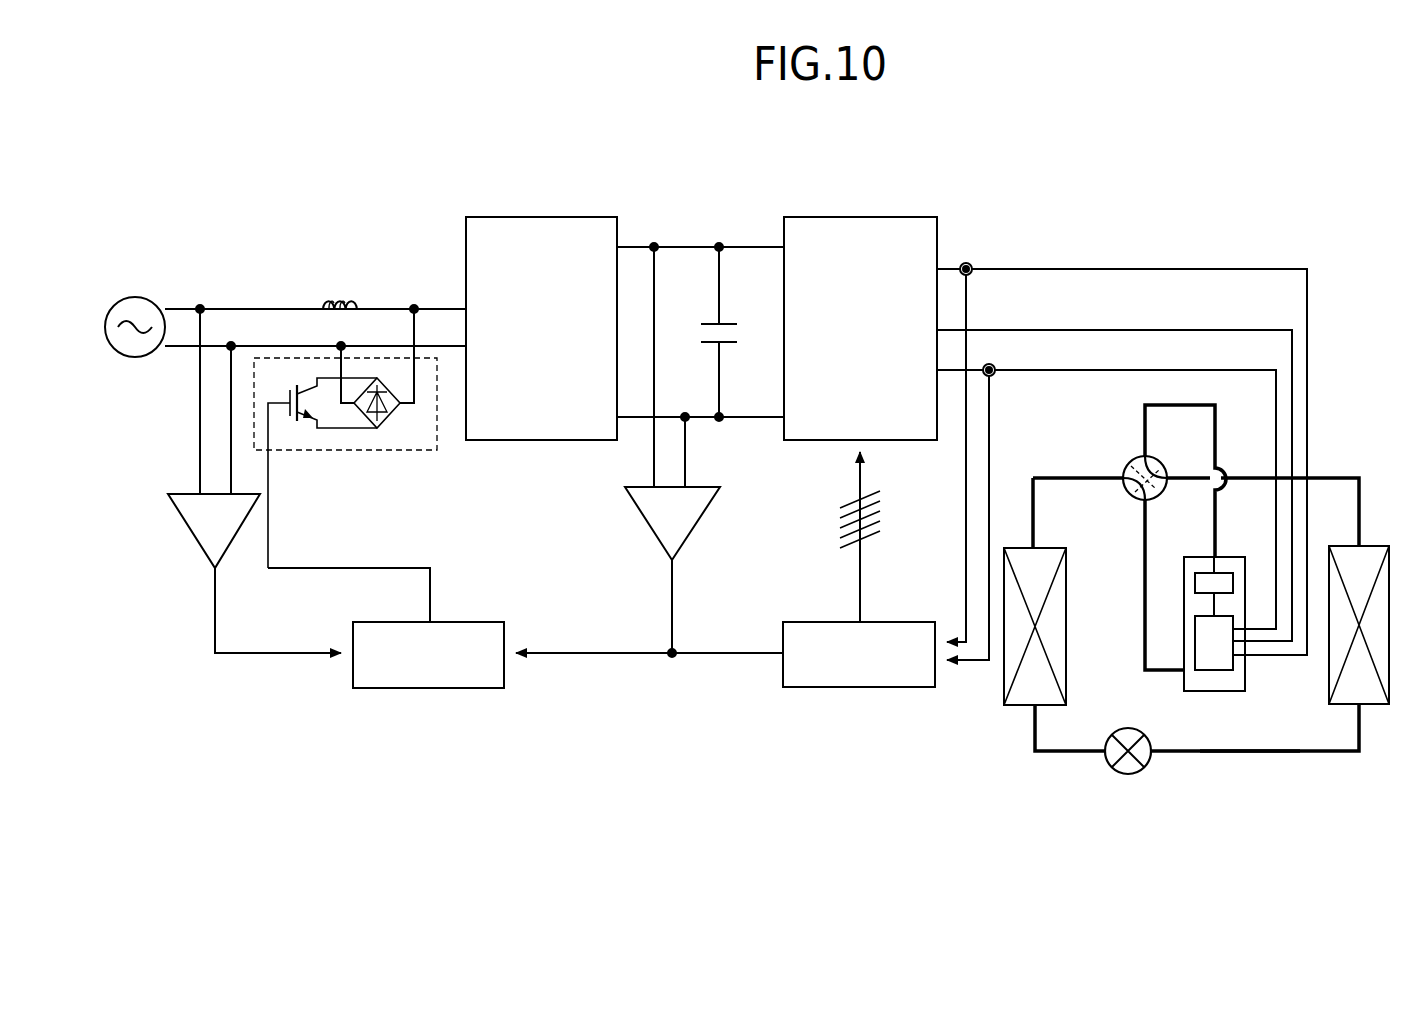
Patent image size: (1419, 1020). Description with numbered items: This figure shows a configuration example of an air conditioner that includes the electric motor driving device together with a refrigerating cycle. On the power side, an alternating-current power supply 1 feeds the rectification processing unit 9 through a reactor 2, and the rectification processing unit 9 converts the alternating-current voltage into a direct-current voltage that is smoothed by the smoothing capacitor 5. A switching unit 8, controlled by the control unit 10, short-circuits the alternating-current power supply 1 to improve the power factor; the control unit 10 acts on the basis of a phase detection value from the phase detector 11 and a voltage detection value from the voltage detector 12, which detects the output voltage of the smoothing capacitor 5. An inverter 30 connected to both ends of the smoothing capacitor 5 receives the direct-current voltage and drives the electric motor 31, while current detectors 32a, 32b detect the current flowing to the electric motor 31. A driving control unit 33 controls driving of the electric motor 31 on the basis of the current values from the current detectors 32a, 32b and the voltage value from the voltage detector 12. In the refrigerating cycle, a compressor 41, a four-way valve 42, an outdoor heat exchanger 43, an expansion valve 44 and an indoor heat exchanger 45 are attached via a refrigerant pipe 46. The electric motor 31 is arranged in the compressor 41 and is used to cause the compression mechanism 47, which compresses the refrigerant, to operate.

The alternating-current power supply 1 is at (135, 297).
The reactor 2 is at (340, 291).
The smoothing capacitor 5 is at (728, 323).
The switching unit 8 is at (420, 451).
The rectification processing unit 9 is at (586, 217).
The control unit 10 is at (468, 622).
The phase detector 11 is at (225, 551).
The voltage detector 12 is at (698, 531).
The inverter 30 is at (902, 217).
The electric motor 31 is at (1215, 670).
The current detector 32a is at (966, 261).
The current detector 32b is at (993, 363).
The driving control unit 33 is at (900, 622).
The compressor 41 is at (1245, 679).
The four-way valve 42 is at (1132, 500).
The outdoor heat exchanger 43 is at (1012, 548).
The expansion valve 44 is at (1128, 774).
The indoor heat exchanger 45 is at (1373, 546).
The refrigerant pipe 46 is at (1232, 756).
The compression mechanism 47 is at (1222, 573).